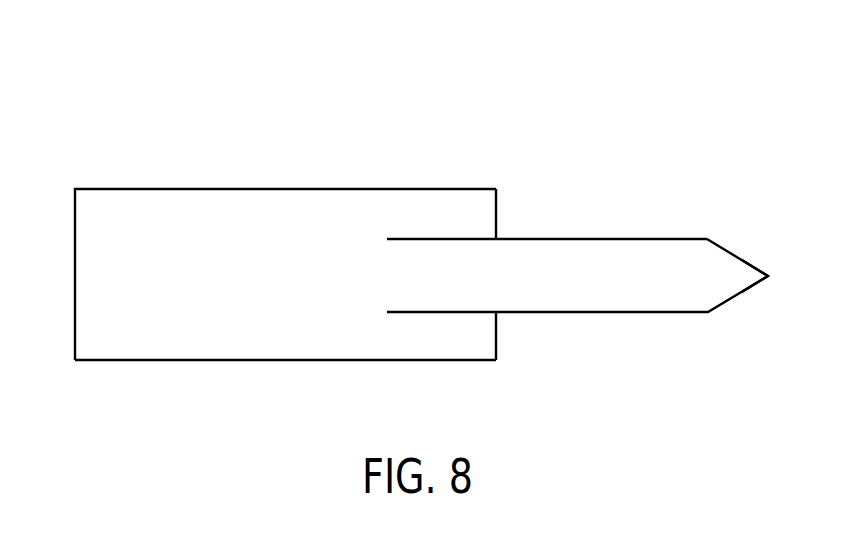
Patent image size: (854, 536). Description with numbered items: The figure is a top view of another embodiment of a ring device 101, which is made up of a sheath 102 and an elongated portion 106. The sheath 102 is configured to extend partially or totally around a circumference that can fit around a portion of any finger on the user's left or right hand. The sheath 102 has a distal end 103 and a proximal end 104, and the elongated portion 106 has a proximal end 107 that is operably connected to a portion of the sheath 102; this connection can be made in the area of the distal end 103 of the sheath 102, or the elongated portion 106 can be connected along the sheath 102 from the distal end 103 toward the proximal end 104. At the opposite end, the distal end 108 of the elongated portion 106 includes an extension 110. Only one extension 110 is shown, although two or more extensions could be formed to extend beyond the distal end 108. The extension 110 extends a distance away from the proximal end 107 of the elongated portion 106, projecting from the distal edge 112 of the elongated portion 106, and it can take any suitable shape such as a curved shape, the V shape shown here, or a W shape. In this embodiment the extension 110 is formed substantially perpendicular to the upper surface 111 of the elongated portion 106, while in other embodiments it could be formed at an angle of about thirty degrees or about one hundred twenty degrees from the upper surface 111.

The ring device 101 is at (92, 98).
The sheath 102 is at (95, 352).
The distal end of the sheath 103 is at (487, 350).
The proximal end of the sheath 104 is at (85, 210).
The elongated portion 106 is at (512, 248).
The proximal end of the elongated portion 107 is at (430, 245).
The distal end of the elongated portion 108 is at (699, 248).
The extension 110 is at (745, 272).
The upper surface of the elongated portion 111 is at (638, 248).
The distal edge of the elongated portion 112 is at (706, 312).